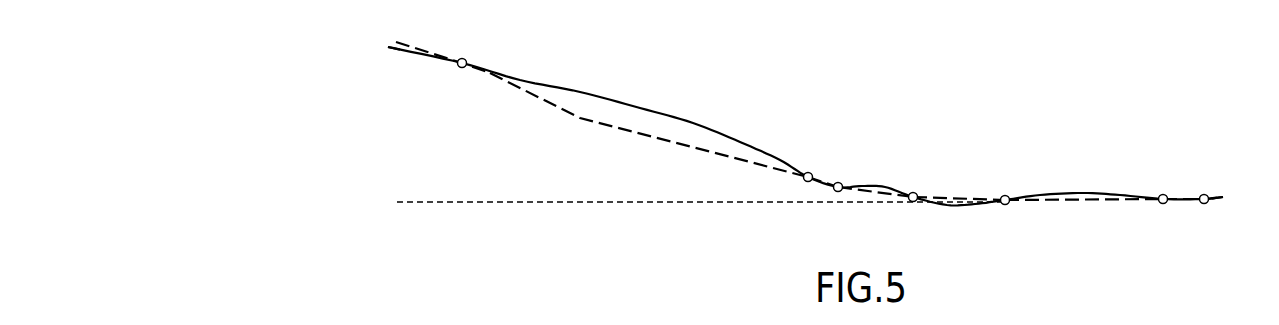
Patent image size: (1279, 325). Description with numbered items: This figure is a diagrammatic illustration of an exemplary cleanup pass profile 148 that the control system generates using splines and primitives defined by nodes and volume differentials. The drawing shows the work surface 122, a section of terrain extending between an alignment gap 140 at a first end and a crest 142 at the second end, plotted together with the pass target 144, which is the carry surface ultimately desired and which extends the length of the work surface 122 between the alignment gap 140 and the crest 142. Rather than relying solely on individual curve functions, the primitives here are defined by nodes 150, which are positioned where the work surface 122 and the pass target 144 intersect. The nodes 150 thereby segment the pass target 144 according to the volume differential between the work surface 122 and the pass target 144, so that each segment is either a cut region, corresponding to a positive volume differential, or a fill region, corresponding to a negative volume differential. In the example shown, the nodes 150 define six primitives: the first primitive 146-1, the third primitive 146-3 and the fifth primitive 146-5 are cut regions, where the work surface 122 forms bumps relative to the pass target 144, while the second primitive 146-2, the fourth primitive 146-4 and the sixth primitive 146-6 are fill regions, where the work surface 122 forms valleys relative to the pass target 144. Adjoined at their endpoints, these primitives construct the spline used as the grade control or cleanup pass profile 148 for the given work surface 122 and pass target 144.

The work surface 122 is at (493, 76).
The alignment gap 140 is at (419, 33).
The crest 142 is at (1227, 190).
The pass target 144 is at (789, 147).
The cleanup pass profile 148 is at (789, 147).
The first primitive 146-1 is at (575, 120).
The second primitive 146-2 is at (826, 180).
The third primitive 146-3 is at (880, 197).
The fourth primitive 146-4 is at (942, 196).
The fifth primitive 146-5 is at (1082, 202).
The sixth primitive 146-6 is at (1185, 198).
The nodes 150 is at (466, 59).